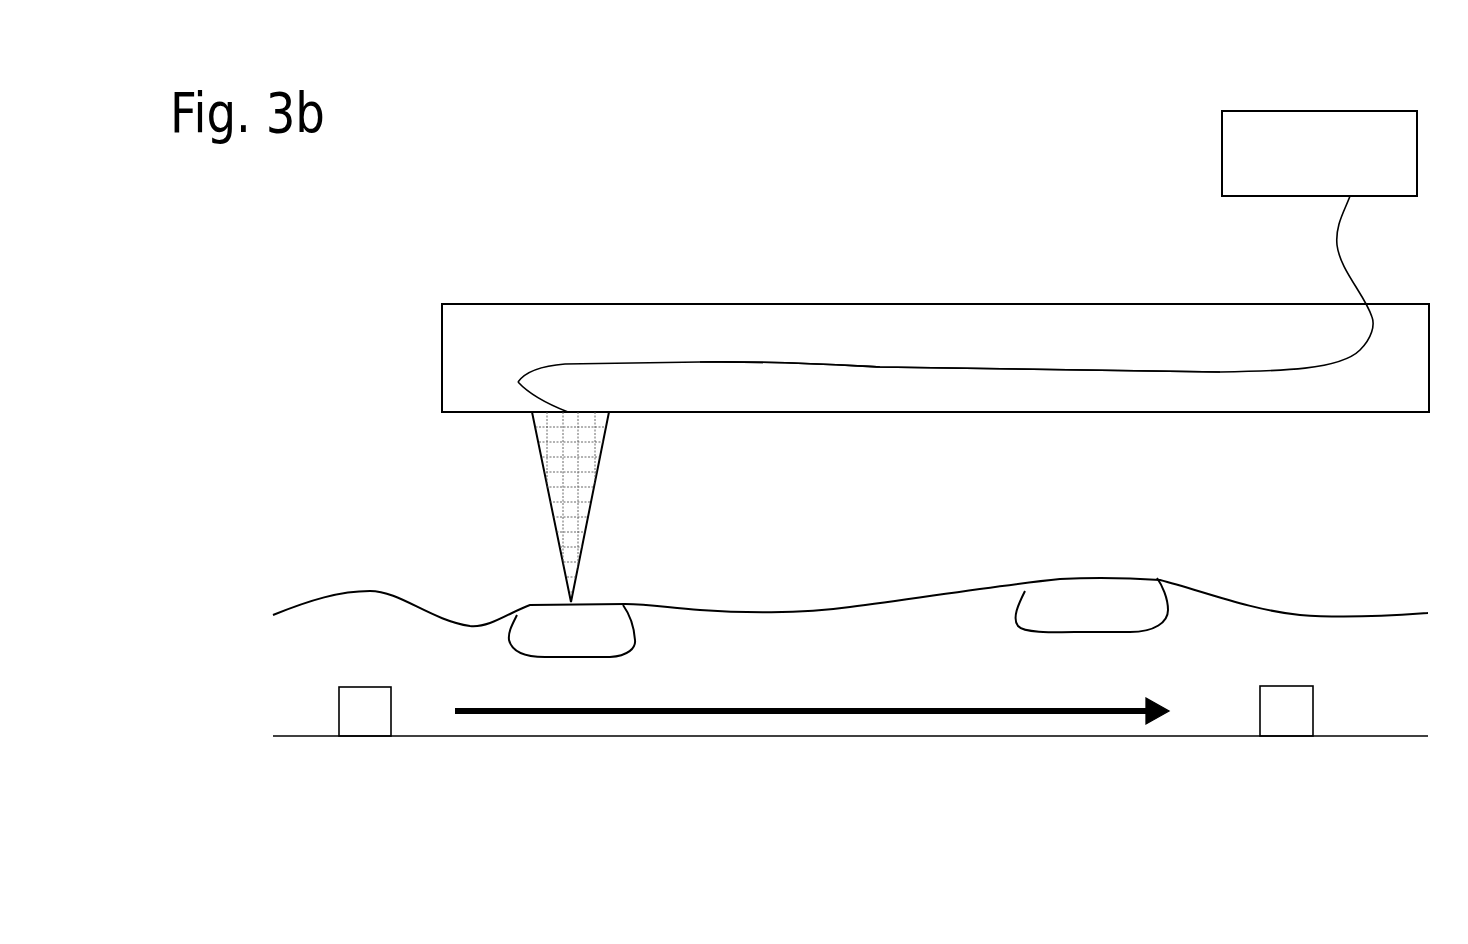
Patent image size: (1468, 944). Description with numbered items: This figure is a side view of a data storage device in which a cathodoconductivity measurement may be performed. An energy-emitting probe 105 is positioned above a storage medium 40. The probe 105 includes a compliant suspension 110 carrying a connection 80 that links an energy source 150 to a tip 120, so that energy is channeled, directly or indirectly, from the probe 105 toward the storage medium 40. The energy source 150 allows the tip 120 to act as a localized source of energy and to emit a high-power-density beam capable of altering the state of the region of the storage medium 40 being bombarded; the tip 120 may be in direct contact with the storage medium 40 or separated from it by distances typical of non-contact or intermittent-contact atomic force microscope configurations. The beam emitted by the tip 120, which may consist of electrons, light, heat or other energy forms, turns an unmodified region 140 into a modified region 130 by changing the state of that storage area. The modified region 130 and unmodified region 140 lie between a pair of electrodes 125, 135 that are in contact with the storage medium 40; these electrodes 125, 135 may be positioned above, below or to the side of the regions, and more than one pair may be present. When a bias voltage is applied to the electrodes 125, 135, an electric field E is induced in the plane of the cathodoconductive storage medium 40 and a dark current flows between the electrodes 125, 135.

The energy-emitting probe 105 is at (405, 329).
The compliant suspension 110 is at (557, 316).
The connection 80 is at (910, 365).
The energy source 150 is at (1319, 153).
The tip 120 is at (585, 460).
The storage medium 40 is at (1208, 638).
The unmodified region 140 is at (820, 627).
The modified region 130 is at (1078, 602).
The electrode 125 is at (366, 711).
The electrode 135 is at (1286, 709).
The electric field E is at (812, 754).